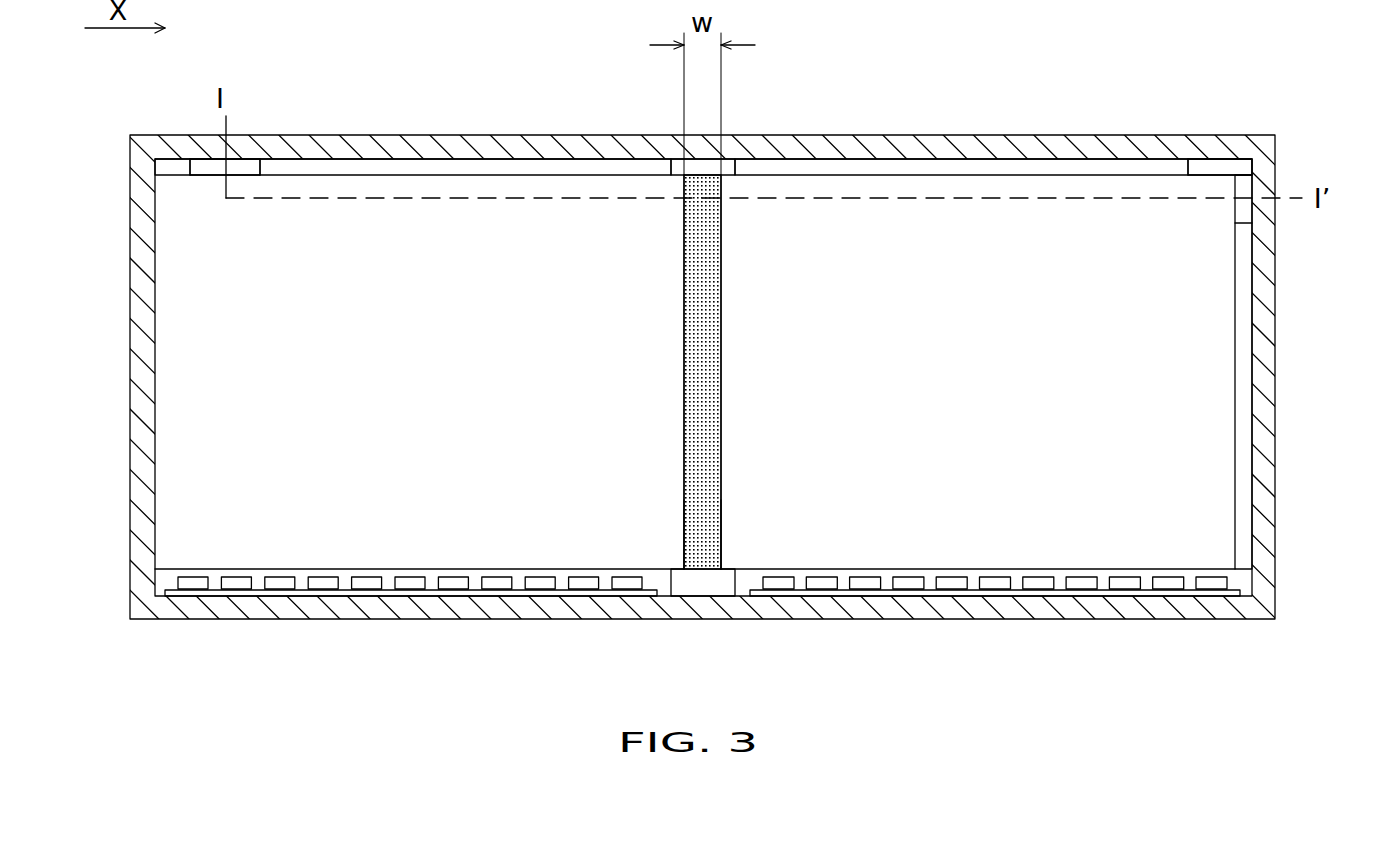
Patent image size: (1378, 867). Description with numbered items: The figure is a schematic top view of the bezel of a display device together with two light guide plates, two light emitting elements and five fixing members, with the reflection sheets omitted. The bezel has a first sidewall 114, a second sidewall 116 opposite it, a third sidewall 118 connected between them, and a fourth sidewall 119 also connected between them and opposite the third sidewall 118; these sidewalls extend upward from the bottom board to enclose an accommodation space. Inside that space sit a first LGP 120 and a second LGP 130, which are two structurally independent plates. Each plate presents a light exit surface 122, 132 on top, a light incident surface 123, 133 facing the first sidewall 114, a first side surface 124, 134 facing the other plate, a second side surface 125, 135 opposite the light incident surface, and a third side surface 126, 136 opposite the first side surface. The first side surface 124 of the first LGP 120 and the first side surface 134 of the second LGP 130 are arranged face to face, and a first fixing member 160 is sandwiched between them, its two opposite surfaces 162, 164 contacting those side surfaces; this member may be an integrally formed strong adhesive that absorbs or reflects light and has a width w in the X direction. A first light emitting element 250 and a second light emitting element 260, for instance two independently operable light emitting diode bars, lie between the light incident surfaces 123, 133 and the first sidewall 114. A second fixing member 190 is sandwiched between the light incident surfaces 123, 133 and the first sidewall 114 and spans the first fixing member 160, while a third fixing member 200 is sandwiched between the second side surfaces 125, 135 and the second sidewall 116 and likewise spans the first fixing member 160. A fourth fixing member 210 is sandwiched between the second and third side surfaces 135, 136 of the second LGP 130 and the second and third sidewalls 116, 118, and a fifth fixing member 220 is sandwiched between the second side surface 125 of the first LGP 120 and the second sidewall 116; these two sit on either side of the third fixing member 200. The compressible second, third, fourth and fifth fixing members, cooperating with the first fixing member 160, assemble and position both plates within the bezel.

The first sidewall 114 is at (500, 606).
The second sidewall 116 is at (505, 150).
The third sidewall 118 is at (1263, 408).
The fourth sidewall 119 is at (140, 252).
The first LGP 120 is at (167, 412).
The light exit surface 122 is at (185, 347).
The light incident surface 123 is at (411, 625).
The first side surface 124 is at (682, 555).
The second side surface 125 is at (383, 173).
The third side surface 126 is at (152, 505).
The second LGP 130 is at (1218, 372).
The light exit surface 132 is at (1200, 325).
The light incident surface 133 is at (995, 625).
The first side surface 134 is at (723, 555).
The second side surface 135 is at (1020, 173).
The third side surface 136 is at (1236, 518).
The first fixing member 160 is at (713, 487).
The surface of first fixing member 162 is at (682, 230).
The surface of first fixing member 164 is at (723, 230).
The second fixing member 190 is at (708, 585).
The third fixing member 200 is at (727, 166).
The fourth fixing member 210 is at (1207, 165).
The fifth fixing member 220 is at (250, 168).
The first light emitting element 250 is at (238, 583).
The second light emitting element 260 is at (1122, 583).